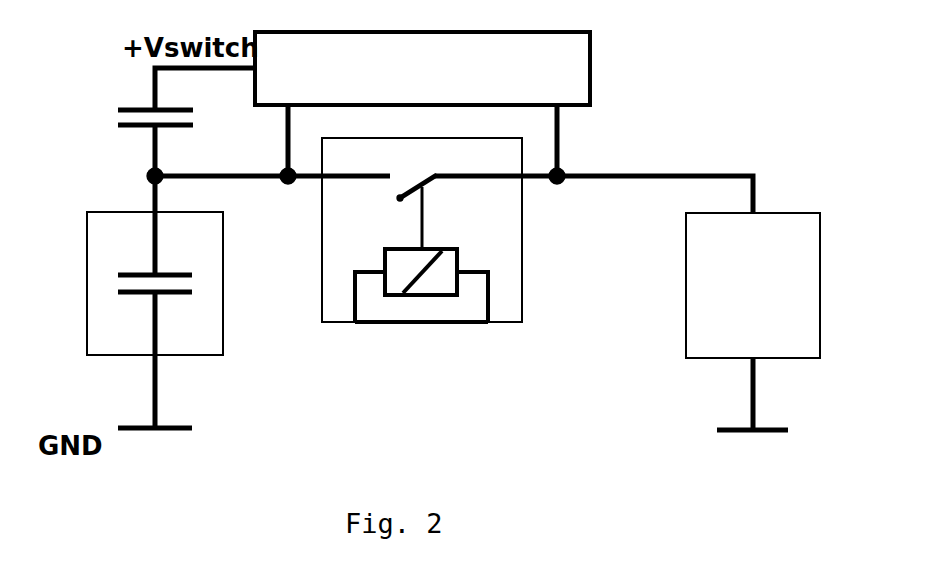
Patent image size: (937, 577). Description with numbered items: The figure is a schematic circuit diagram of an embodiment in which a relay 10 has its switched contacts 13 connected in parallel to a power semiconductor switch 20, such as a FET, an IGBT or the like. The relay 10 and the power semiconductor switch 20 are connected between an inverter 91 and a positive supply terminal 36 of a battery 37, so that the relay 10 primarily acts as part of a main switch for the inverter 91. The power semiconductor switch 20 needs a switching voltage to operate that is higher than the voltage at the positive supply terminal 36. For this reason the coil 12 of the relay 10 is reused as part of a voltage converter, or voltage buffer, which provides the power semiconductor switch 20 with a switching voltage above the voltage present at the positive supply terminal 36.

The relay 10 is at (426, 257).
The coil 12 is at (422, 280).
The switched contacts 13 is at (395, 198).
The power semiconductor switch 20 is at (568, 45).
The positive supply terminal 36 is at (147, 177).
The battery 37 is at (110, 319).
The inverter 91 is at (707, 250).